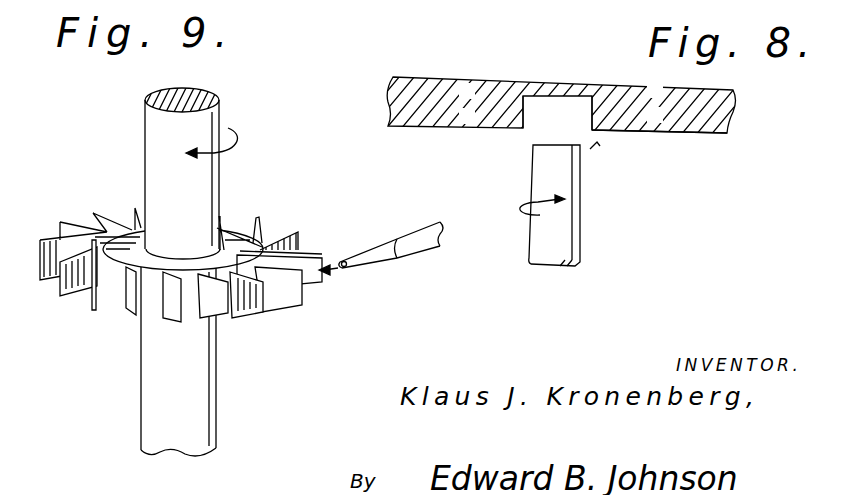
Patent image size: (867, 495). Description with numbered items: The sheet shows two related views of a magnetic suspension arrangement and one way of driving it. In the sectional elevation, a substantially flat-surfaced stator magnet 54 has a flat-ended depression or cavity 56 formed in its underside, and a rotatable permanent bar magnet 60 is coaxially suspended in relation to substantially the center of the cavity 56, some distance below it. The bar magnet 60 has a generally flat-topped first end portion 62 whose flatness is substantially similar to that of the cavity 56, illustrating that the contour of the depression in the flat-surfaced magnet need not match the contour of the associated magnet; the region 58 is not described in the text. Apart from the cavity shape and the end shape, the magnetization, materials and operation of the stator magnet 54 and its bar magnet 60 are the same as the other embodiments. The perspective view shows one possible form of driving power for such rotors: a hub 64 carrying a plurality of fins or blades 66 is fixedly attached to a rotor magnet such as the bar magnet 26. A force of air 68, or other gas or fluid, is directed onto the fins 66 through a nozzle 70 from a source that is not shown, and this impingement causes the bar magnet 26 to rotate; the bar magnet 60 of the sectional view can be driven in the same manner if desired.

In FIG. 9, the bar magnet 26 is at (221, 160).
In FIG. 9, the hub 64 is at (125, 250).
In FIG. 9, the fins or blades 66 is at (228, 312).
In FIG. 9, the force of air 68 is at (338, 273).
In FIG. 9, the nozzle 70 is at (376, 248).
In FIG. 8, the stator magnet 54 is at (718, 111).
In FIG. 8, the cavity 56 is at (523, 112).
In FIG. 8, the magnet pole face 58 is at (706, 134).
In FIG. 8, the bar magnet 60 is at (582, 240).
In FIG. 8, the first end portion 62 is at (567, 157).